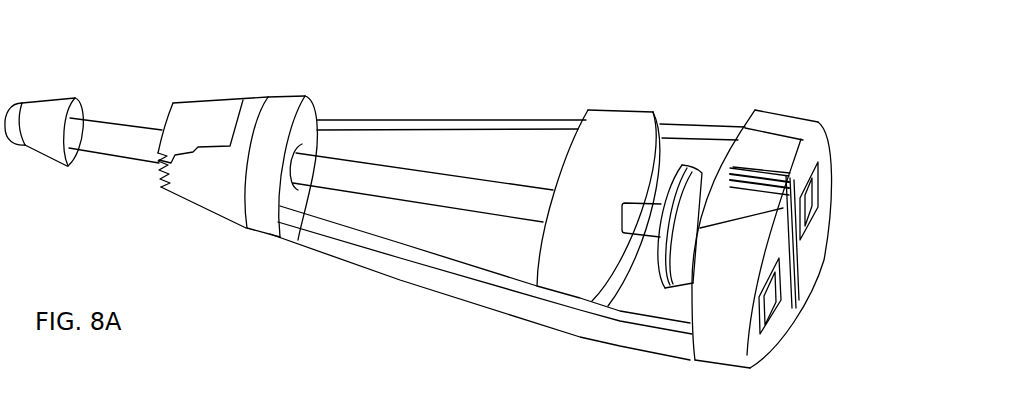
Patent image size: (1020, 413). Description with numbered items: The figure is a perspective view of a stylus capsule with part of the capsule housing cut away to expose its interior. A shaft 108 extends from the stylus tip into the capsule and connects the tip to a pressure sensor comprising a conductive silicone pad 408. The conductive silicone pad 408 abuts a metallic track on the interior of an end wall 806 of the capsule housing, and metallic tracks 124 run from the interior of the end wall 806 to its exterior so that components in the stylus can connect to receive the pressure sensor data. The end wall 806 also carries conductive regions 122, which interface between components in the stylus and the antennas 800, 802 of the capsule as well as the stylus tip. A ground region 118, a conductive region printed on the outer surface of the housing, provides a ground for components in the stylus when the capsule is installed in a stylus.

The shaft 108 is at (44, 118).
The antenna 800 is at (182, 128).
The antenna 802 is at (280, 122).
The ground region 118 is at (360, 252).
The conductive silicone pad 408 is at (702, 197).
The end wall 806 is at (787, 127).
The conductive regions 122 is at (813, 193).
The metallic tracks 124 is at (792, 281).